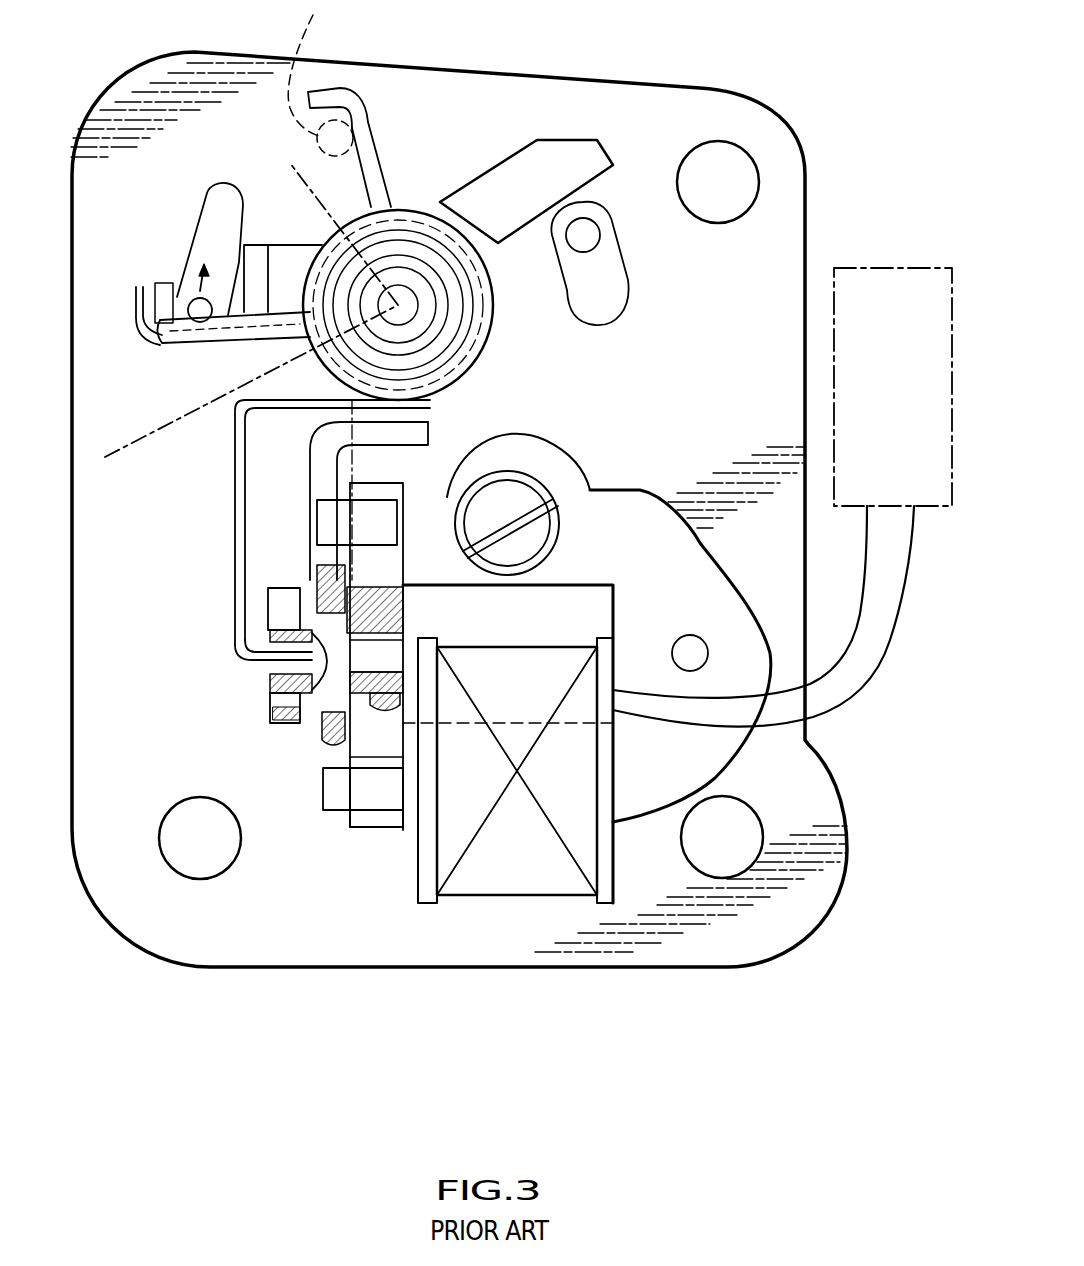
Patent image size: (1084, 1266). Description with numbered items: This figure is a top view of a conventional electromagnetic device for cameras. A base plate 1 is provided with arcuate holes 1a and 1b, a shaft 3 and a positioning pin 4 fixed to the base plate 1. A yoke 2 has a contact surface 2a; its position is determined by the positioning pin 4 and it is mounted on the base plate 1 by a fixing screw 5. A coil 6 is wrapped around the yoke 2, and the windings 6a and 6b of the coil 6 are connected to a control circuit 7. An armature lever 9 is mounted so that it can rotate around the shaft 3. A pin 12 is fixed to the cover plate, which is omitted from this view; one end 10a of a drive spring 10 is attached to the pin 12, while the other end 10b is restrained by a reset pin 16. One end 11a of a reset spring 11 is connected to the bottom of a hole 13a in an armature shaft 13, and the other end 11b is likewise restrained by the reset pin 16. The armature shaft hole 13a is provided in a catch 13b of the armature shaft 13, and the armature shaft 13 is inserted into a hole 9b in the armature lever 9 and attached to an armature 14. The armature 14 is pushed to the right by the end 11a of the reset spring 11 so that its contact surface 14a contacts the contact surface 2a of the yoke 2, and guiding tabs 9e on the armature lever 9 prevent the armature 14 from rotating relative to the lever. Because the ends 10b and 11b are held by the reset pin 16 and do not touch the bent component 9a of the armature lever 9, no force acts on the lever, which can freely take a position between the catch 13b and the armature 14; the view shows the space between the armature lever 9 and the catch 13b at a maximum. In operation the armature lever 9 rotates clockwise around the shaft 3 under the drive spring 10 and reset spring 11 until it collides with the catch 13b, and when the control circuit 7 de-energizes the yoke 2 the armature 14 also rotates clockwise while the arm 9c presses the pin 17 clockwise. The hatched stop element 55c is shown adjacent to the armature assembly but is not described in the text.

The base plate 1 is at (705, 975).
The arcuate hole 1a is at (622, 277).
The arcuate hole 1b is at (199, 218).
The yoke 2 is at (647, 490).
The contact surface 2a is at (403, 557).
The shaft 3 is at (412, 313).
The positioning pin 4 is at (368, 127).
The fixing screw 5 is at (542, 528).
The coil 6 is at (565, 898).
The winding 6a is at (883, 679).
The winding 6b is at (854, 634).
The control circuit 7 is at (900, 265).
The armature lever 9 is at (330, 770).
The bent component 9a is at (258, 253).
The hole 9b is at (327, 706).
The arm 9c is at (590, 168).
The guiding tabs 9e is at (360, 507).
The drive spring 10 is at (413, 200).
The end of drive spring 10a is at (367, 112).
The end of drive spring 10b is at (200, 340).
The reset spring 11 is at (237, 527).
The end of reset spring 11a is at (293, 657).
The end of reset spring 11b is at (138, 322).
The pin 12 is at (320, 78).
The armature shaft 13 is at (273, 707).
The armature shaft hole 13a is at (273, 637).
The catch 13b is at (290, 597).
The armature 14 is at (388, 757).
The contact surface 14a is at (400, 513).
The reset pin 16 is at (190, 298).
The pin 17 is at (600, 240).
The stop bracket 55c is at (305, 640).